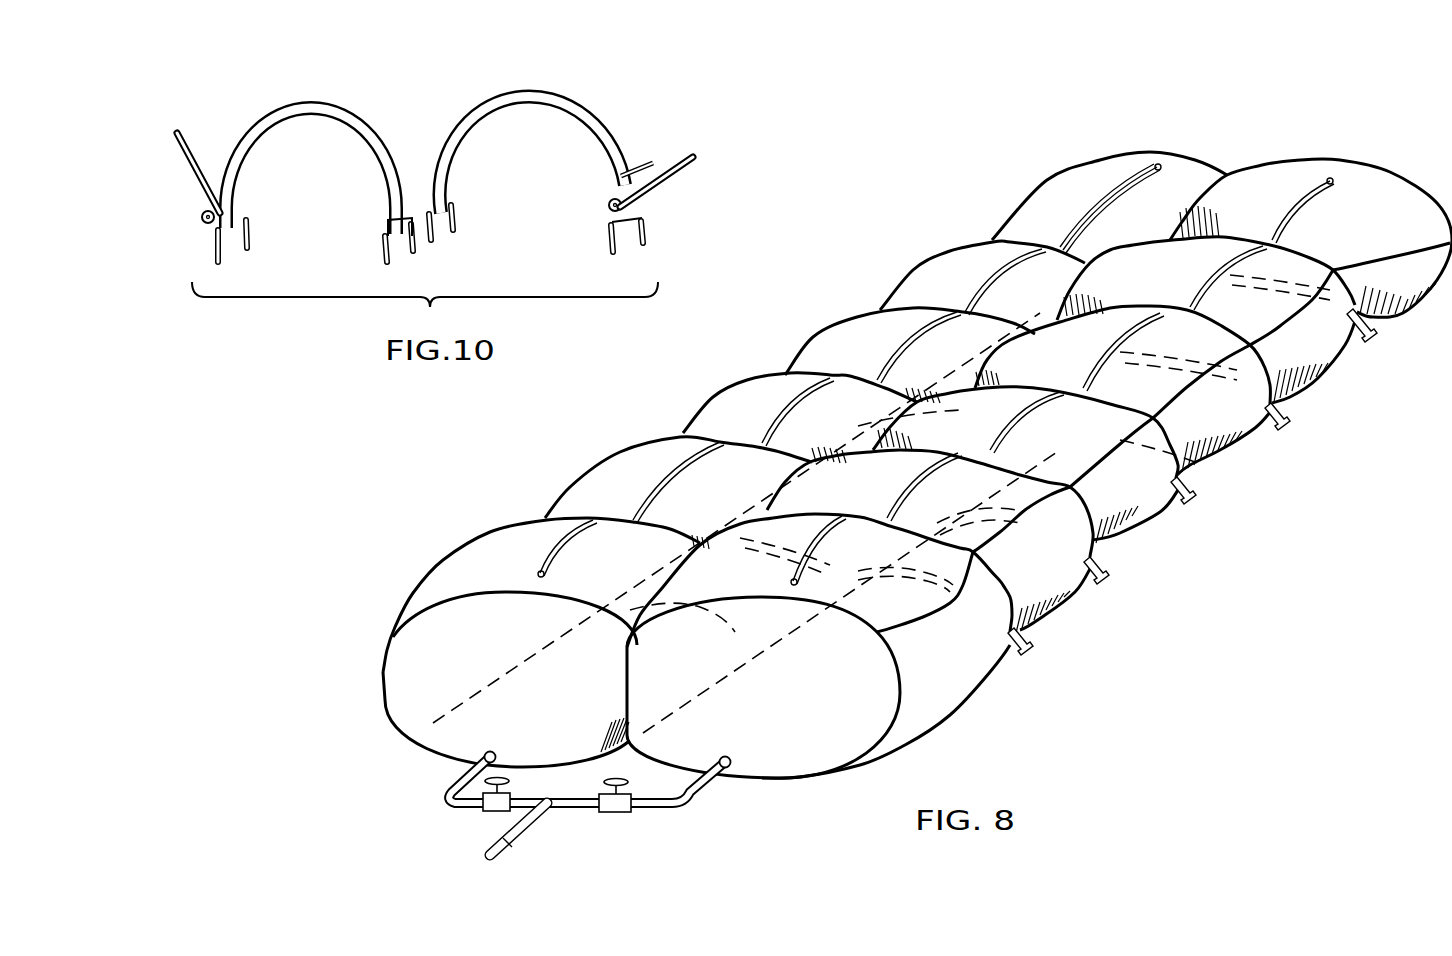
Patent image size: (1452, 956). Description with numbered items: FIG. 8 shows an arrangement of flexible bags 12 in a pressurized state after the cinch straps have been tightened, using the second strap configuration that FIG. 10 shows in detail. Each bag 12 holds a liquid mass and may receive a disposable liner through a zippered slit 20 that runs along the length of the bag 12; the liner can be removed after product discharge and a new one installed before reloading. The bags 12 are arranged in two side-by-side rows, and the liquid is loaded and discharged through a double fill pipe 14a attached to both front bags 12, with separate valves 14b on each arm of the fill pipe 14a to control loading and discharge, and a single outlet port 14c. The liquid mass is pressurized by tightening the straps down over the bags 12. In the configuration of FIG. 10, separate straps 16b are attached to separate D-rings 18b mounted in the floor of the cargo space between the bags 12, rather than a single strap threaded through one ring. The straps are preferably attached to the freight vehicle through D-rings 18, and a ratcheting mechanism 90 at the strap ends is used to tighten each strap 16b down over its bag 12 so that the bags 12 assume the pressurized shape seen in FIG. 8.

In FIG. 8, the bag 12 is at (1047, 186).
In FIG. 8, the zippered slit 20 is at (1150, 162).
In FIG. 10, the straps 16b is at (384, 140).
In FIG. 8, the straps 16b is at (1270, 420).
In FIG. 10, the D-rings 18 is at (643, 223).
In FIG. 8, the D-rings 18 is at (1292, 423).
In FIG. 10, the D-rings 18b is at (380, 247).
In FIG. 10, the ratcheting mechanism 90 is at (200, 193).
In FIG. 8, the fill pipe 14a is at (697, 804).
In FIG. 8, the valves 14b is at (488, 810).
In FIG. 8, the outlet port 14c is at (508, 848).